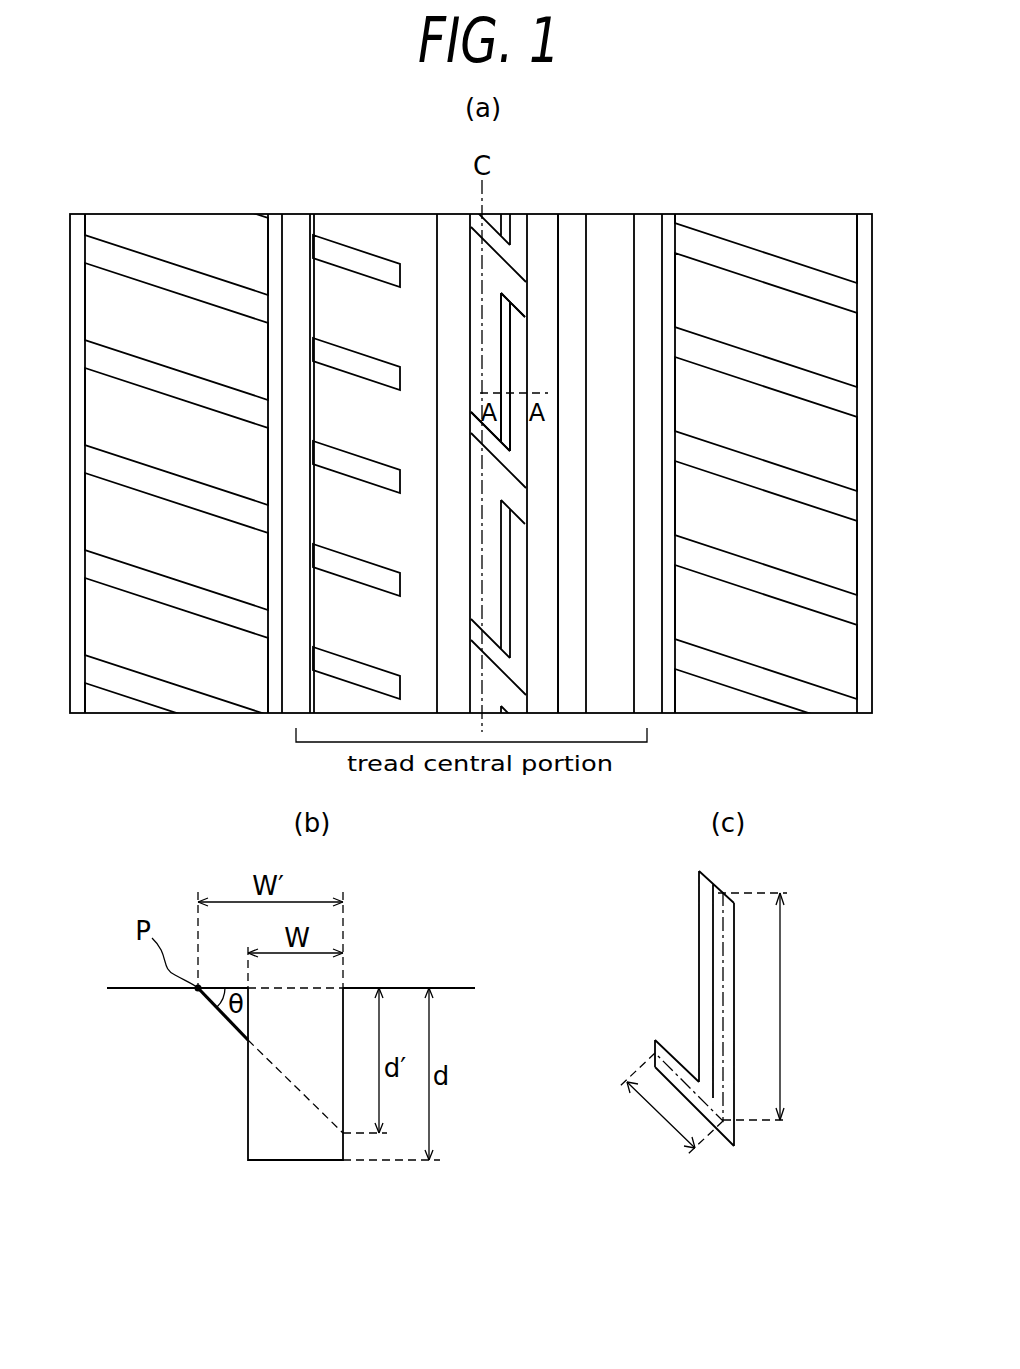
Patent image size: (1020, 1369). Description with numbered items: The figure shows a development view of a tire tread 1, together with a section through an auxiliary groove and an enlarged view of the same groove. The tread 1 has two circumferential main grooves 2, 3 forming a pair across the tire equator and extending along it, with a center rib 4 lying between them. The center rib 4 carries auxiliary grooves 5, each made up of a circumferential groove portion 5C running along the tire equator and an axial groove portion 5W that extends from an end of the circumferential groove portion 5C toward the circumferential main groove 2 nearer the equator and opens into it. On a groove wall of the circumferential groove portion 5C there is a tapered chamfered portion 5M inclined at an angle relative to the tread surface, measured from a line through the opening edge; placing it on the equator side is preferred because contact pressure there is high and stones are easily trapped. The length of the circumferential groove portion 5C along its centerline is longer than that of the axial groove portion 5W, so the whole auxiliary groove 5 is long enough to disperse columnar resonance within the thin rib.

The tread 1 is at (719, 181).
The circumferential main groove 2 is at (452, 227).
The circumferential main groove 3 is at (572, 228).
The center rib 4 is at (543, 230).
The auxiliary groove 5 is at (519, 303).
The circumferential groove portion 5C is at (518, 332).
The axial groove portion 5W is at (498, 452).
The chamfered portion 5M is at (243, 1043).